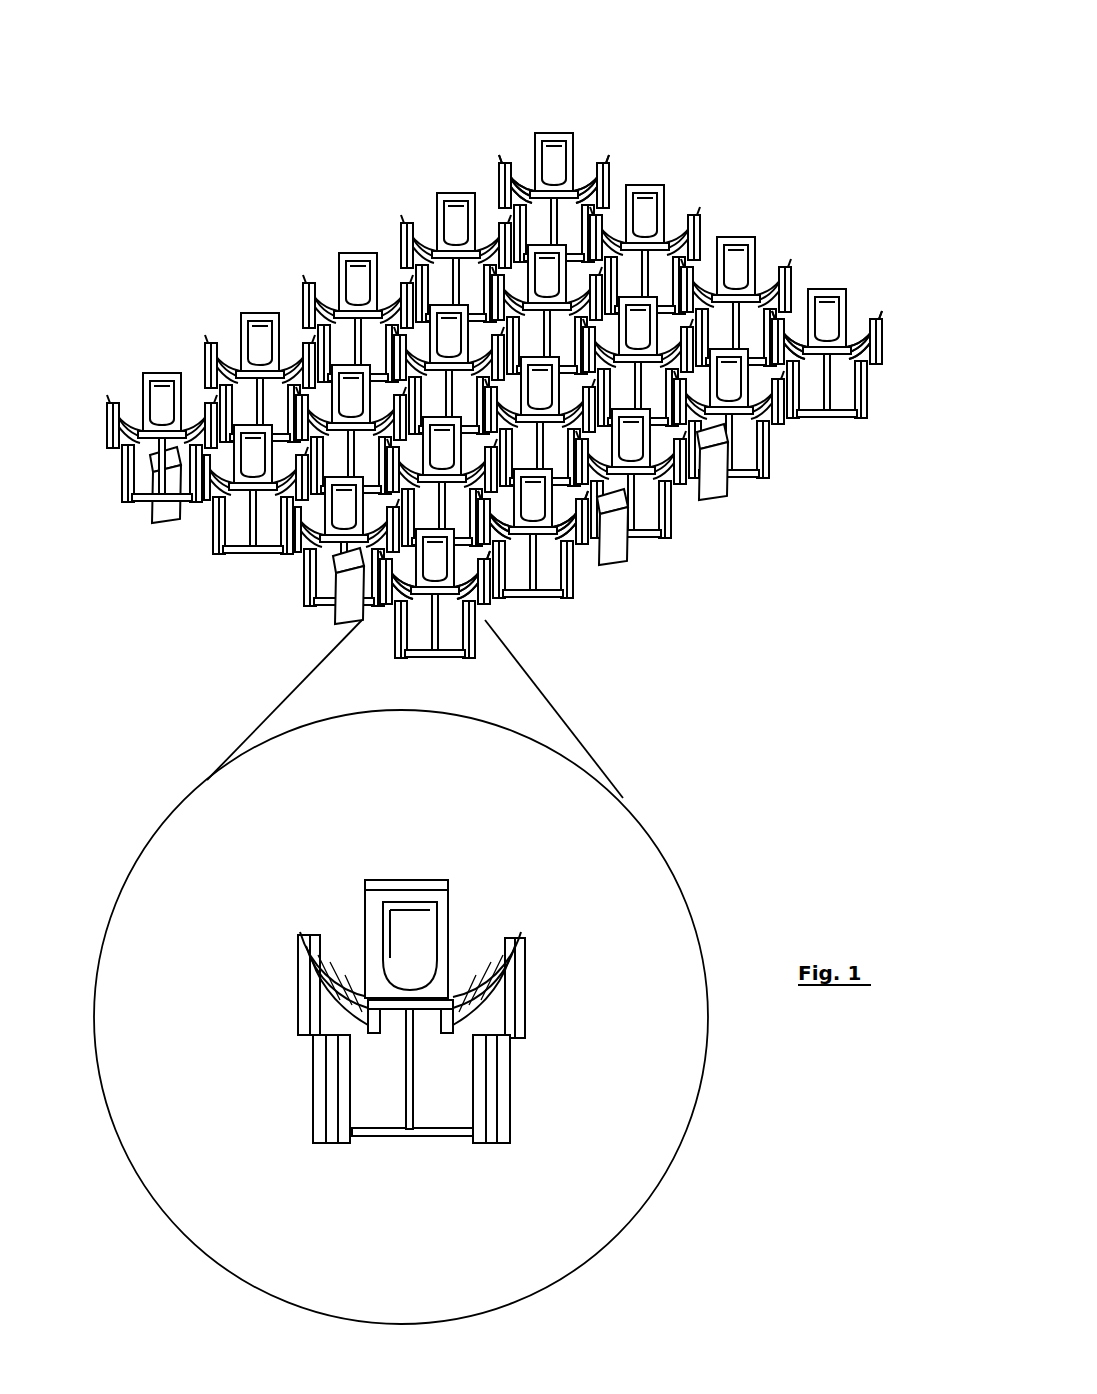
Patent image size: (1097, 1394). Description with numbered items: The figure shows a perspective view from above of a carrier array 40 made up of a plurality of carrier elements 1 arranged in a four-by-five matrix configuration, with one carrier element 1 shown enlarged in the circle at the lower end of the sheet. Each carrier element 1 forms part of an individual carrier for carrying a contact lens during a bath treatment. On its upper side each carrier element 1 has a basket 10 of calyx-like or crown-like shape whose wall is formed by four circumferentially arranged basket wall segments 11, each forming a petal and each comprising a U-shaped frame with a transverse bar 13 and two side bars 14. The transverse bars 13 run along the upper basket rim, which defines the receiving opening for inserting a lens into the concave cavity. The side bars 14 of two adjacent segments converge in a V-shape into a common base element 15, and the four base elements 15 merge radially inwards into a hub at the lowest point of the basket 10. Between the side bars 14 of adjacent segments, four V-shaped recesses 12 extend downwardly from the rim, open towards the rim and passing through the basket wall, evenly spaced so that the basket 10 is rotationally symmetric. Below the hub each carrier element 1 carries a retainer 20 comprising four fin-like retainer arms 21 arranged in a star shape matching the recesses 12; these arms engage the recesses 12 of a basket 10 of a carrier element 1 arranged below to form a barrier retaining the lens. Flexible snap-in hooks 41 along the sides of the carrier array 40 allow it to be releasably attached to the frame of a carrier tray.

The carrier element 1 is at (545, 608).
The basket 10 is at (228, 318).
The basket wall segment 11 is at (550, 128).
The recess 12 is at (512, 150).
The transverse bar 13 is at (410, 905).
The side bar 14 is at (372, 920).
The base element 15 is at (330, 935).
The retainer 20 is at (130, 505).
The retainer arm 21 is at (320, 1022).
The carrier array 40 is at (262, 130).
The snap-in hook 41 is at (170, 495).